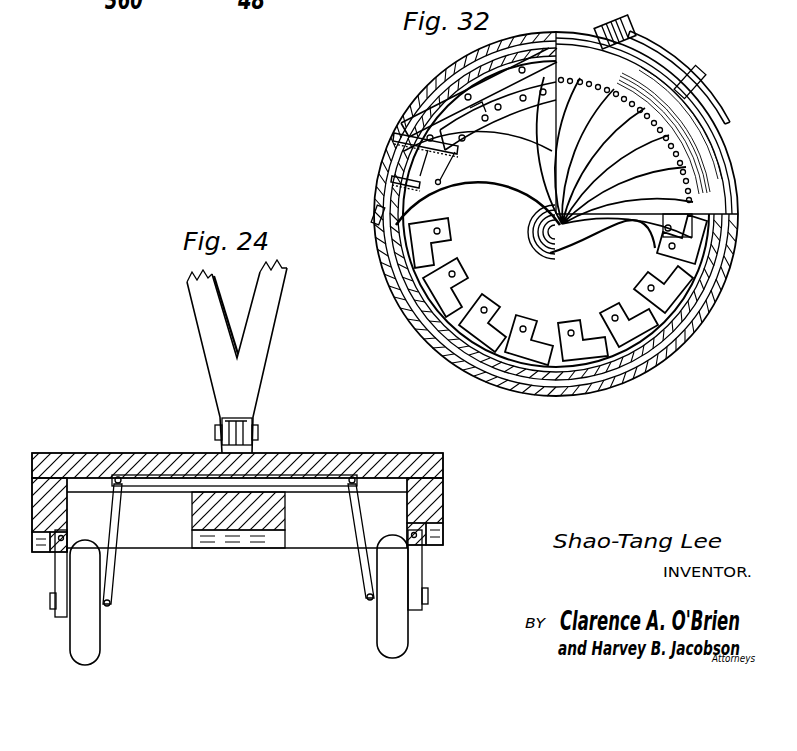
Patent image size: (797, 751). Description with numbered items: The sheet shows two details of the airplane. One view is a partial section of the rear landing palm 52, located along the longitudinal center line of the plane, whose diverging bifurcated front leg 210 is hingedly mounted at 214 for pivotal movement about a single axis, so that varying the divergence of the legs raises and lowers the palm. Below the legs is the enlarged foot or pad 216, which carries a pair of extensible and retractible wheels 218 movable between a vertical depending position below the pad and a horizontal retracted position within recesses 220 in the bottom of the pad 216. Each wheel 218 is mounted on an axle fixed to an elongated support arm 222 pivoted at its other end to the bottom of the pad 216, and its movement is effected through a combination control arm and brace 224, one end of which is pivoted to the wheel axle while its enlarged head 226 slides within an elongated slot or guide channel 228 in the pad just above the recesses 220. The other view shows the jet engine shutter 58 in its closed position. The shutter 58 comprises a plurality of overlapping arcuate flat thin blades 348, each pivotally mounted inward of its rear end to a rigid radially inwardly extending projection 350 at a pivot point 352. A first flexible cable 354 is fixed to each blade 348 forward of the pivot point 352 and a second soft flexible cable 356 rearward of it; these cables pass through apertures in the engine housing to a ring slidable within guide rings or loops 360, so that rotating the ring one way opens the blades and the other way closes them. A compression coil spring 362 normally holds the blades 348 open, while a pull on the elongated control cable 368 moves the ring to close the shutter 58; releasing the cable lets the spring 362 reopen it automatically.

In FIG. 24, the rear landing palm 52 is at (385, 443).
In FIG. 24, the front leg 210 is at (215, 352).
In FIG. 24, the hinge mounting 214 is at (256, 432).
In FIG. 24, the enlarged foot or pad 216 is at (442, 470).
In FIG. 24, the extensible and retractible wheels 218 is at (90, 640).
In FIG. 24, the recesses 220 is at (327, 530).
In FIG. 24, the elongated support arm 222 is at (414, 573).
In FIG. 24, the combination control arm and brace 224 is at (116, 515).
In FIG. 24, the enlarged head 226 is at (352, 480).
In FIG. 24, the elongated slot or guide channel 228 is at (317, 474).
In FIG. 32, the shutter construction 58 is at (452, 252).
In FIG. 32, the shutter blades 348 is at (506, 178).
In FIG. 32, the radially inwardly extending projection 350 is at (530, 318).
In FIG. 32, the pivot point 352 is at (443, 184).
In FIG. 32, the first flexible cable 354 is at (405, 142).
In FIG. 32, the second soft flexible cable 356 is at (393, 183).
In FIG. 32, the guide rings or loops 360 is at (376, 216).
In FIG. 32, the compression coil spring 362 is at (614, 22).
In FIG. 32, the control cable 368 is at (727, 116).